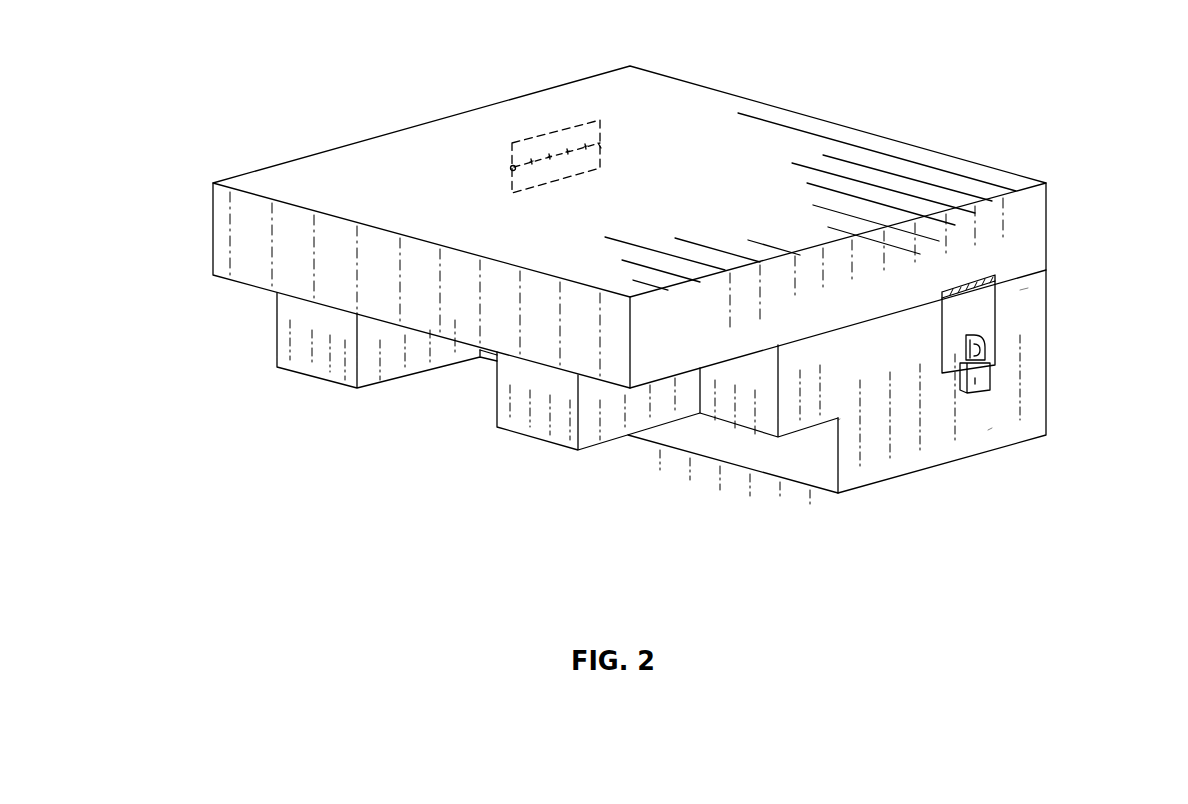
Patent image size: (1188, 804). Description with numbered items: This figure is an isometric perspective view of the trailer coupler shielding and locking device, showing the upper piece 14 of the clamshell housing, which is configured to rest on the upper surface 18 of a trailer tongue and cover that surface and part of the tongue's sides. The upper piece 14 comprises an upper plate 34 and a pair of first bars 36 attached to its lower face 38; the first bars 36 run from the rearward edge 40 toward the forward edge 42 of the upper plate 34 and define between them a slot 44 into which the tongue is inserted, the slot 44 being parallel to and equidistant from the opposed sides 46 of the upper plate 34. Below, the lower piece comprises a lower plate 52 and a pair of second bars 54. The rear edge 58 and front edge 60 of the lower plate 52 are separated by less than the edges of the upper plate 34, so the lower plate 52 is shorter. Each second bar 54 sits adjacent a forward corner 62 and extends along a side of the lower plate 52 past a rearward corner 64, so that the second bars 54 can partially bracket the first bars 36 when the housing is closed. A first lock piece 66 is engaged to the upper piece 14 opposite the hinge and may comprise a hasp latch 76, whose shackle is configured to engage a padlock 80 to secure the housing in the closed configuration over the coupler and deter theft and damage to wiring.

The upper piece 14 is at (660, 300).
The upper surface 18 is at (1056, 354).
The upper plate 34 is at (802, 112).
The first bars 36 is at (290, 325).
The lower face 38 is at (240, 283).
The rearward edge 40 is at (1047, 245).
The forward edge 42 is at (565, 372).
The slot 44 is at (685, 411).
The opposed sides 46 is at (455, 112).
The lower plate 52 is at (992, 428).
The second bars 54 is at (483, 357).
The rear edge 58 is at (1048, 423).
The front edge 60 is at (840, 473).
The forward corner 62 is at (840, 420).
The rearward corner 64 is at (1047, 323).
The first lock piece 66 is at (990, 303).
The hasp latch 76 is at (995, 342).
The padlock 80 is at (1028, 288).